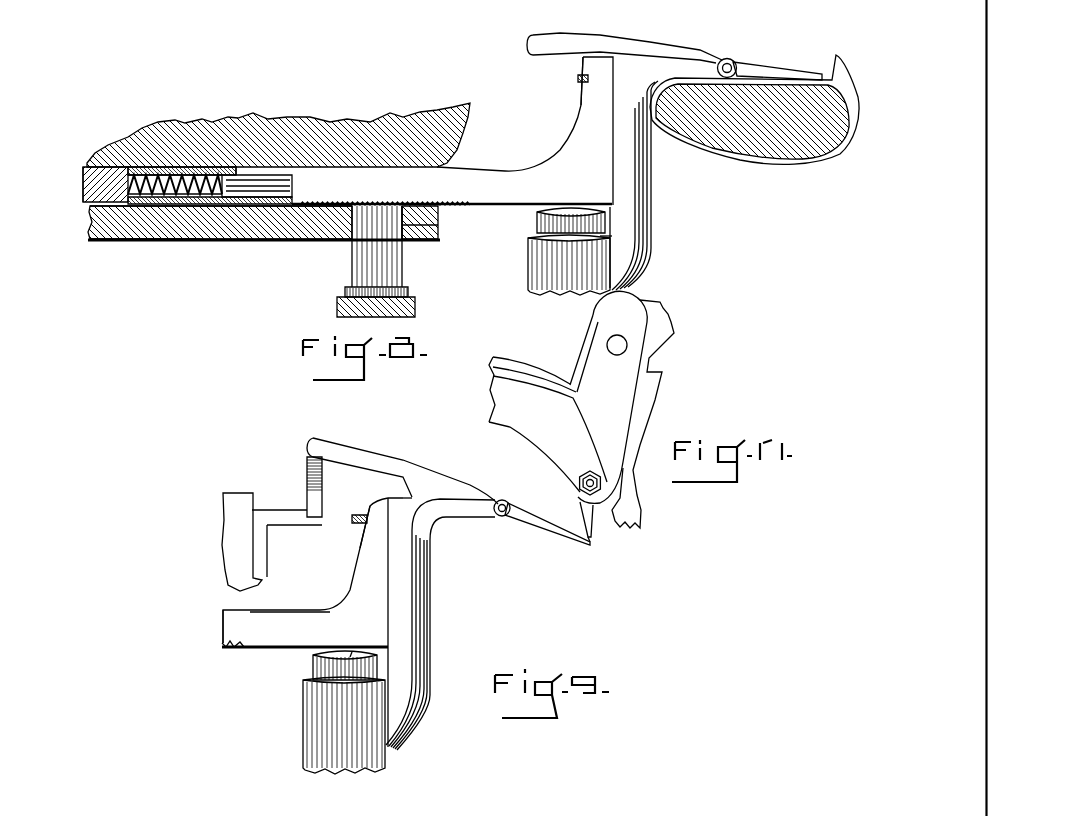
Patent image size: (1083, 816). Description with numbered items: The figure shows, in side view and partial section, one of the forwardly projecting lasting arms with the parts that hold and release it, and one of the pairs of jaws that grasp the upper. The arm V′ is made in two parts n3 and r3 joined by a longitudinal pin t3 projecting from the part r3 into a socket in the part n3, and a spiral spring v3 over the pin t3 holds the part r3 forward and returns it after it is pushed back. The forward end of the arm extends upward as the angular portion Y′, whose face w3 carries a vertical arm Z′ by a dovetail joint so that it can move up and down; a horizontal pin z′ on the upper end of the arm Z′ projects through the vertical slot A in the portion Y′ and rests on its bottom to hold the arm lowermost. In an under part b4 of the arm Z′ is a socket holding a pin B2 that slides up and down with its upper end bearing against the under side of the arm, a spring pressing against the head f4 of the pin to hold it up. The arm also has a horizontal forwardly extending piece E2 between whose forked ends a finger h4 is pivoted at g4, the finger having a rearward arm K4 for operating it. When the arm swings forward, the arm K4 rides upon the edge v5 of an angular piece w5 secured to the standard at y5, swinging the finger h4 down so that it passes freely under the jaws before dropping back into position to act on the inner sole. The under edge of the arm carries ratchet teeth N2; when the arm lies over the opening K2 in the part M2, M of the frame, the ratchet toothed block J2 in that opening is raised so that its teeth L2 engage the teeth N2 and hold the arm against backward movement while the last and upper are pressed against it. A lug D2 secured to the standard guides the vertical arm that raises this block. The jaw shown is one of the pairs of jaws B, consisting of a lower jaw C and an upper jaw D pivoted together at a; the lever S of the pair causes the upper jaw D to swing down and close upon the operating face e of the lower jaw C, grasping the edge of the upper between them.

In FIG. 8, the slot A is at (466, 153).
In FIG. 8, the lug D2 is at (510, 114).
In FIG. 8, the ratchet-teeth N2 is at (333, 202).
In FIG. 9, the ratchet-teeth N2 is at (236, 648).
In FIG. 8, the arm part r3 is at (376, 200).
In FIG. 8, the frame part M2 is at (320, 233).
In FIG. 8, the vertical block J2 is at (221, 240).
In FIG. 8, the arm part n3 is at (127, 240).
In FIG. 8, the spiral spring v3 is at (213, 240).
In FIG. 8, the projecting pin t3 is at (266, 242).
In FIG. 8, the opening K2 is at (440, 226).
In FIG. 8, the frame part M is at (441, 222).
In FIG. 8, the ratchet-teeth L2 is at (390, 224).
In FIG. 8, the face w3 is at (610, 134).
In FIG. 9, the face w3 is at (388, 548).
In FIG. 8, the angular portion Y′ is at (582, 113).
In FIG. 9, the angular portion Y′ is at (362, 570).
In FIG. 8, the horizontal pin z′ is at (578, 78).
In FIG. 9, the horizontal pin z′ is at (356, 516).
In FIG. 8, the vertical arm Z′ is at (625, 177).
In FIG. 9, the vertical arm Z′ is at (432, 578).
In FIG. 8, the pin B2 is at (540, 233).
In FIG. 9, the pin B2 is at (313, 671).
In FIG. 8, the under part b4 is at (540, 267).
In FIG. 9, the under part b4 is at (315, 718).
In FIG. 8, the head f4 is at (604, 233).
In FIG. 9, the head f4 is at (352, 655).
In FIG. 8, the arm K4 is at (567, 30).
In FIG. 9, the arm K4 is at (352, 453).
In FIG. 8, the forwardly-extending piece E2 is at (709, 58).
In FIG. 9, the forwardly-extending piece E2 is at (467, 508).
In FIG. 8, the pivot g4 is at (735, 65).
In FIG. 9, the pivot g4 is at (503, 516).
In FIG. 8, the finger h4 is at (788, 69).
In FIG. 9, the finger h4 is at (540, 528).
In FIG. 9, the edge v5 is at (307, 460).
In FIG. 9, the angular piece w5 is at (308, 506).
In FIG. 9, the securing point y5 is at (222, 562).
In FIG. 9, the arm V′ is at (268, 640).
In FIG. 11, the lever S is at (595, 350).
In FIG. 11, the pair of jaws B is at (573, 459).
In FIG. 11, the pivot a is at (580, 485).
In FIG. 11, the lower jaw C is at (580, 513).
In FIG. 11, the operating face e is at (593, 519).
In FIG. 11, the upper jaw D is at (640, 508).